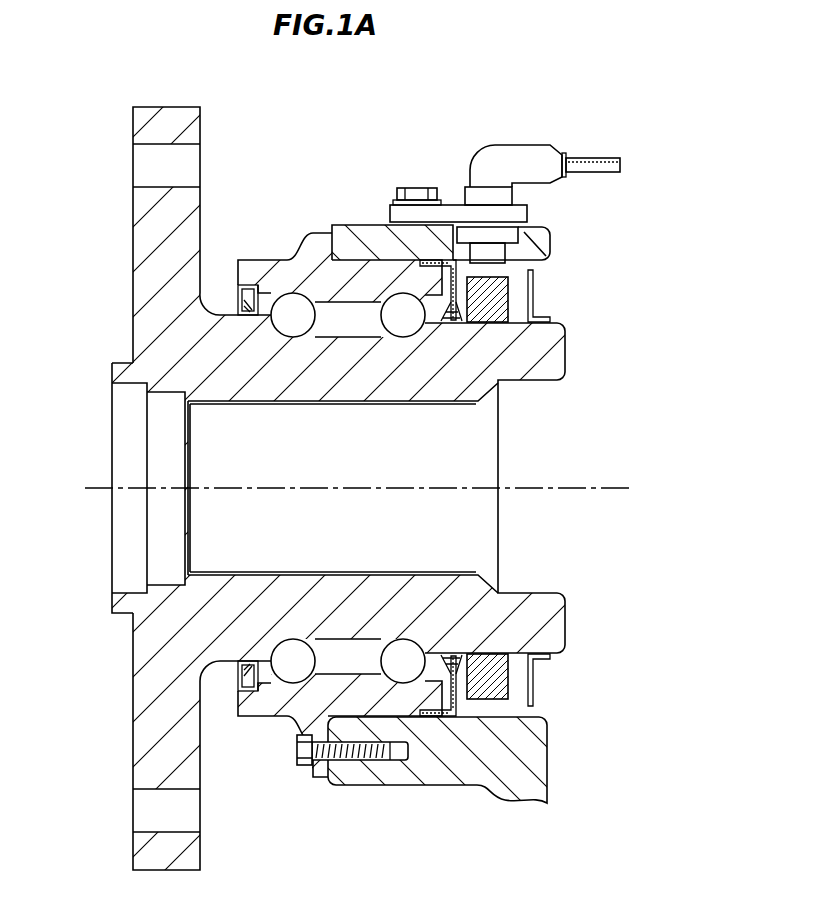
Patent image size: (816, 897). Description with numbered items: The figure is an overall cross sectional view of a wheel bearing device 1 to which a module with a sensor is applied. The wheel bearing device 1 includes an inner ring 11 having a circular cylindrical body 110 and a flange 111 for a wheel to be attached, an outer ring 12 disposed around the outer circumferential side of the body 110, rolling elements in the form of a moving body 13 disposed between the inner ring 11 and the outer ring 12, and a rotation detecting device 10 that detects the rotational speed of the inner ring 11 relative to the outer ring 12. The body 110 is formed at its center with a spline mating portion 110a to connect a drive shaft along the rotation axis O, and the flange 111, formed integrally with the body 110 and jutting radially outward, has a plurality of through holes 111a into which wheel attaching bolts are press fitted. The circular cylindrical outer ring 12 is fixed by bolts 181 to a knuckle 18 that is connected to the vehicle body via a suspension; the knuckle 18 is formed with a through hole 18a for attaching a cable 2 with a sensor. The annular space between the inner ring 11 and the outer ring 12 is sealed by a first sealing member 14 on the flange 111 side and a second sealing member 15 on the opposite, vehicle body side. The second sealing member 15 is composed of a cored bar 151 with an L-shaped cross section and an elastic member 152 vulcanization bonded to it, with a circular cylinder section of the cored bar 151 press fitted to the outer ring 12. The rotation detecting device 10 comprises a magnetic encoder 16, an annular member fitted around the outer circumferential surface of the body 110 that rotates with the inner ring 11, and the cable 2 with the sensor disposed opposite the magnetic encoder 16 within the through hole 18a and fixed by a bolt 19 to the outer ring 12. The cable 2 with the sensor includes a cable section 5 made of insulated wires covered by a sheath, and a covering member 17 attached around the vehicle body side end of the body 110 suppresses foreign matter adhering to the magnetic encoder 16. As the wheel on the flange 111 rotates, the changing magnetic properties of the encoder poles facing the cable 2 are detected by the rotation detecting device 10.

The wheel bearing device 1 is at (123, 93).
The rotation detecting device 10 is at (539, 98).
The cable with a sensor 2 is at (602, 383).
The cable section 5 is at (572, 162).
The bolt 19 is at (413, 190).
The outer ring 12 is at (317, 245).
The knuckle 18 is at (463, 509).
The through hole 18a is at (548, 255).
The bolt 181 is at (365, 763).
The covering member 17 is at (533, 313).
The magnetic encoder 16 is at (510, 322).
The first sealing member 14 is at (238, 290).
The inner ring 11 is at (306, 490).
The flange 111 is at (146, 257).
The through holes 111a is at (147, 186).
The body 110 is at (207, 362).
The spline mating portion 110a is at (302, 575).
The moving body 13 is at (289, 327).
The second sealing member 15 is at (418, 488).
The cored bar 151 is at (454, 303).
The elastic member 152 is at (442, 305).
The rotation axis O is at (575, 487).